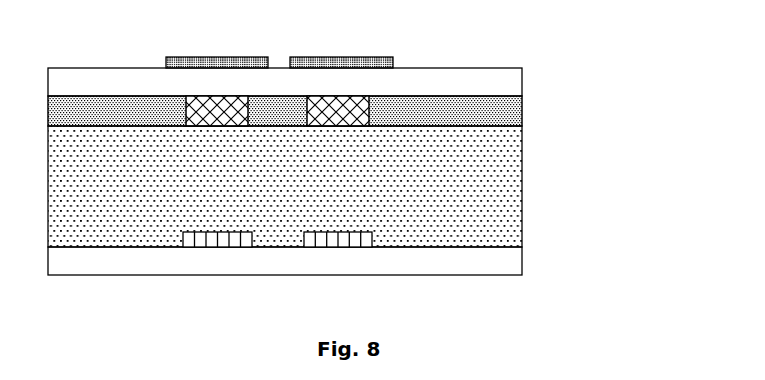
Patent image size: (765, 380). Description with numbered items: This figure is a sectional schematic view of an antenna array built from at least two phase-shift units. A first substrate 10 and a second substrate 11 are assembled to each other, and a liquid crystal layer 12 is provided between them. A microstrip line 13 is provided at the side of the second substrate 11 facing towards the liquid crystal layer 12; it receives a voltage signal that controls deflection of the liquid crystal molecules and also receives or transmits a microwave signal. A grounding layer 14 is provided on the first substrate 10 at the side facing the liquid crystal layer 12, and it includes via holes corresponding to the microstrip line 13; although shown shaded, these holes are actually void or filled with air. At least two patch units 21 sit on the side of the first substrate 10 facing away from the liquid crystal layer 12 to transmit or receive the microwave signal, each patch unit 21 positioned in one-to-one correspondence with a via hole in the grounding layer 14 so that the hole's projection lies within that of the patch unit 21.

The first substrate 10 is at (522, 84).
The second substrate 11 is at (522, 258).
The liquid crystal layer 12 is at (522, 182).
The microstrip line 13 is at (372, 238).
The grounding layer 14 is at (522, 113).
The patch unit 21 is at (393, 63).